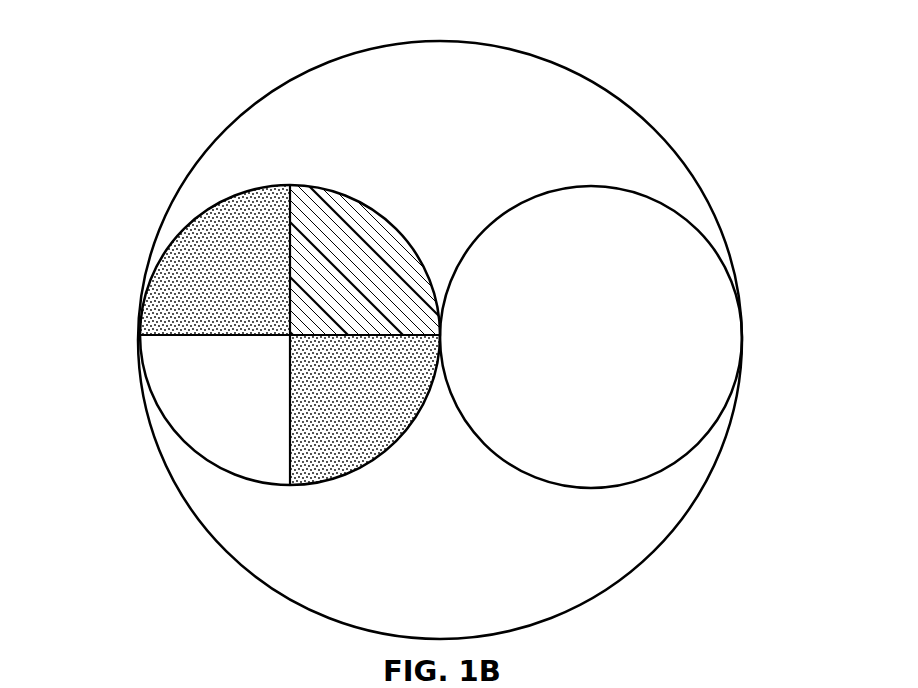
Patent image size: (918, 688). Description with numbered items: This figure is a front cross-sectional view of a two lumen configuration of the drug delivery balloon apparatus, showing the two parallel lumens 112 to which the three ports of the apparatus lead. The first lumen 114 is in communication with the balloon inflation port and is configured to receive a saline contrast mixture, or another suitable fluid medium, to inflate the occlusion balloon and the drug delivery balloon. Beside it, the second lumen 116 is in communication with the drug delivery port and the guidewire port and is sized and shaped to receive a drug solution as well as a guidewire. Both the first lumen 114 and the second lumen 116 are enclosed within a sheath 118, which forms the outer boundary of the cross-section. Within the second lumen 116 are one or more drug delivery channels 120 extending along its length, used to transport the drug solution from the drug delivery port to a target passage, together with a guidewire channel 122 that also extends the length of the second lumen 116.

The parallel lumens 112 is at (457, 334).
The first lumen 114 is at (662, 202).
The second lumen 116 is at (243, 190).
The sheath 118 is at (282, 83).
The drug delivery channels 120 is at (362, 205).
The guidewire channel 122 is at (200, 398).